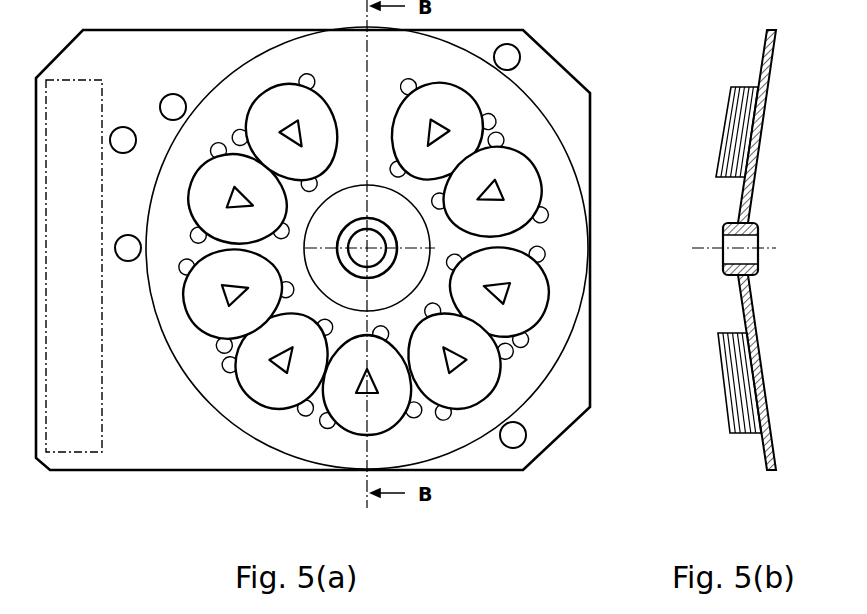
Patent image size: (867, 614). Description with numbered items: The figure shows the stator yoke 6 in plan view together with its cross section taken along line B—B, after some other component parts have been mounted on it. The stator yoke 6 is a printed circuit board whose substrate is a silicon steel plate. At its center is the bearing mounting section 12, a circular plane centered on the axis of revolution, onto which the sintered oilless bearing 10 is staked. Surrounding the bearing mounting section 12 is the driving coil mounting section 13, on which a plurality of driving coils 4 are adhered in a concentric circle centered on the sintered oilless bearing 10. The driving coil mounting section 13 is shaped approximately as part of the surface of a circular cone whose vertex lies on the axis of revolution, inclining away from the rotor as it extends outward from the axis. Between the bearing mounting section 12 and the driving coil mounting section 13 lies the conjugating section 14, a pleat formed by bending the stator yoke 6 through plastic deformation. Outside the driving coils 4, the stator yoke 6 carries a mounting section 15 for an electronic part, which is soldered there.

In FIG. 5A, the driving coil 4 is at (515, 177).
In FIG. 5B, the driving coil 4 is at (725, 127).
In FIG. 5A, the stator yoke 6 is at (123, 50).
In FIG. 5B, the stator yoke 6 is at (749, 250).
In FIG. 5A, the sintered oilless bearing 10 is at (353, 222).
In FIG. 5B, the sintered oilless bearing 10 is at (727, 275).
In FIG. 5B, the bearing mounting section 12 is at (738, 213).
In FIG. 5A, the driving coil mounting section 13 is at (430, 62).
In FIG. 5B, the driving coil mounting section 13 is at (760, 73).
In FIG. 5B, the conjugating section 14 is at (738, 312).
In FIG. 5A, the mounting section for electronic part 15 is at (88, 452).